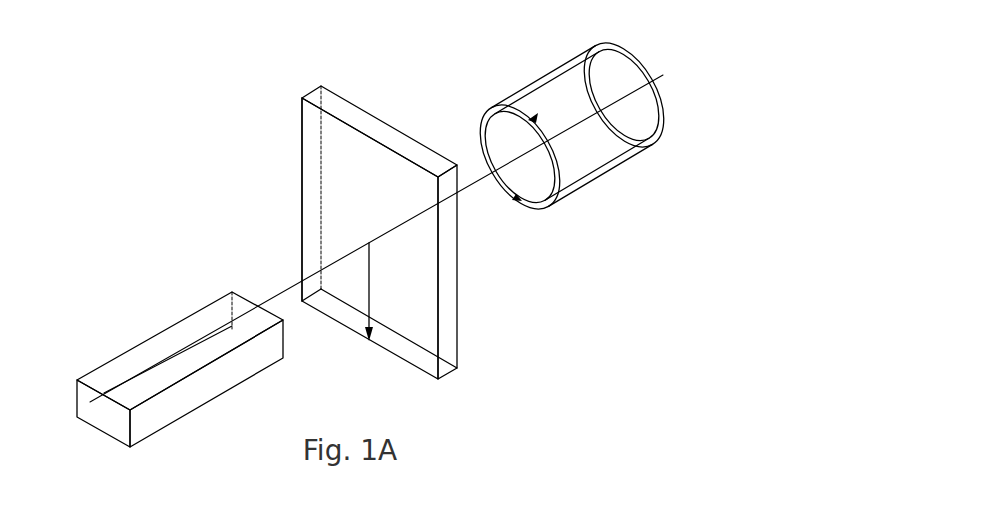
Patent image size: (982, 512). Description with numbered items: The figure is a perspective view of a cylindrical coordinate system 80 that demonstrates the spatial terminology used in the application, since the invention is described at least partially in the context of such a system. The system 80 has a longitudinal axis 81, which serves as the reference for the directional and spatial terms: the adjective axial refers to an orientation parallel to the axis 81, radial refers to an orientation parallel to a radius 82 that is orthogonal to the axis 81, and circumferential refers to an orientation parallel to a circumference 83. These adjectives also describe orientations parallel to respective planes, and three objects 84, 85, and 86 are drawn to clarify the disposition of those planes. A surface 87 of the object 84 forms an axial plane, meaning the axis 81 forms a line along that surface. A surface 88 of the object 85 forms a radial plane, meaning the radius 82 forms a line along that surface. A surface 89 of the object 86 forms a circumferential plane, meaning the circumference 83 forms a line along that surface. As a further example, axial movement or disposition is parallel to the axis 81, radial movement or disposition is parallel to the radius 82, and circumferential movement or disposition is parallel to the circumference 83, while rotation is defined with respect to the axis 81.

The cylindrical coordinate system 80 is at (262, 130).
The longitudinal axis 81 is at (651, 68).
The radius 82 is at (370, 285).
The circumference 83 is at (482, 124).
The object 84 is at (152, 435).
The object 85 is at (470, 377).
The object 86 is at (603, 189).
The surface 87 is at (148, 354).
The surface 88 is at (313, 198).
The surface 89 is at (545, 72).